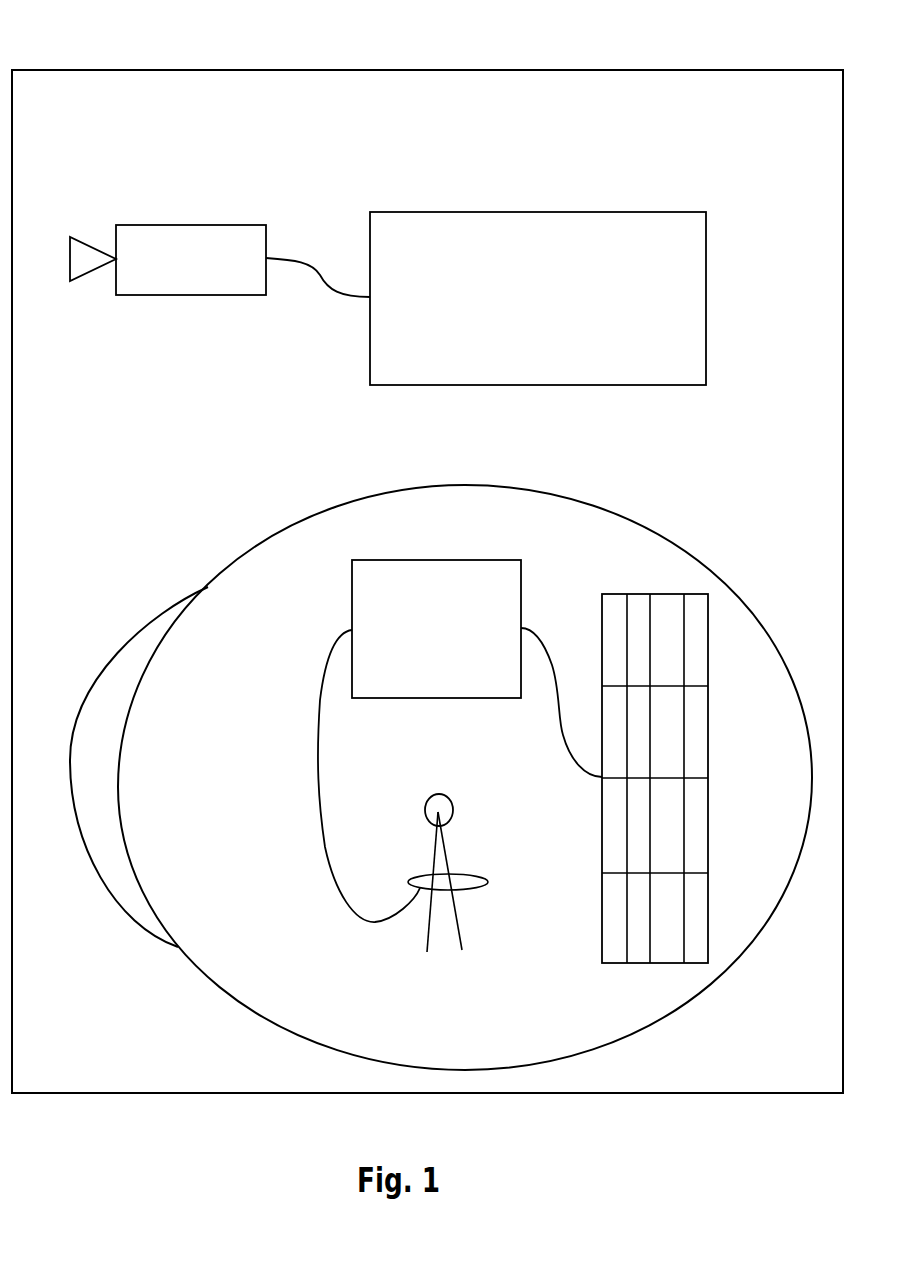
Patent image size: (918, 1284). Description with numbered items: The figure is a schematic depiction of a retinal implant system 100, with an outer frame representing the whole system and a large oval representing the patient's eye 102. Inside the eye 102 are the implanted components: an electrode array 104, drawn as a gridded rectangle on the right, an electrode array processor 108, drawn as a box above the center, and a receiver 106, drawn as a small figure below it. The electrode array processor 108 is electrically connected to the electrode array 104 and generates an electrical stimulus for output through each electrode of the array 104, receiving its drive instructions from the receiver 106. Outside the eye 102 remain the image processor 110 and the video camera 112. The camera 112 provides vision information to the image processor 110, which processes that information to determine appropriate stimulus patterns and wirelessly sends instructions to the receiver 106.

The retinal implant system 100 is at (427, 548).
The patient's eye 102 is at (441, 777).
The electrode array 104 is at (689, 778).
The receiver 106 is at (454, 897).
The electrode array processor 108 is at (460, 741).
The image processor 110 is at (538, 298).
The video camera 112 is at (220, 261).